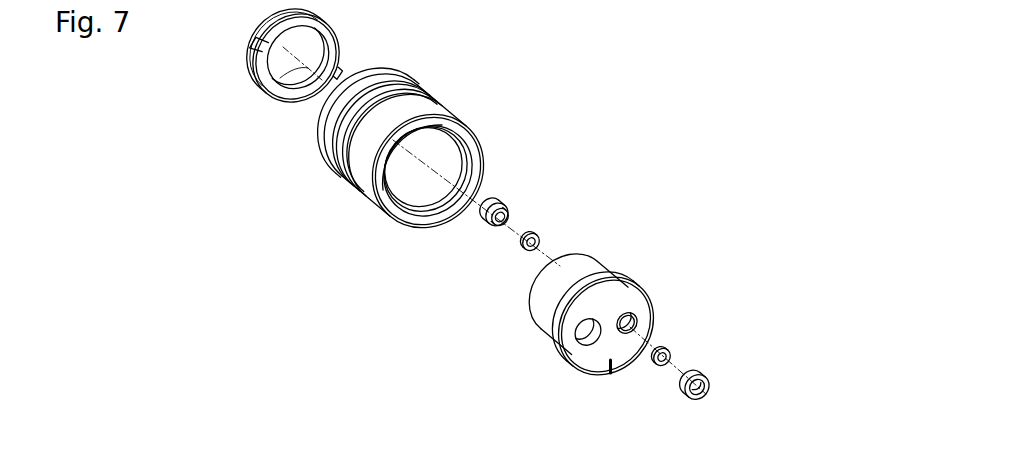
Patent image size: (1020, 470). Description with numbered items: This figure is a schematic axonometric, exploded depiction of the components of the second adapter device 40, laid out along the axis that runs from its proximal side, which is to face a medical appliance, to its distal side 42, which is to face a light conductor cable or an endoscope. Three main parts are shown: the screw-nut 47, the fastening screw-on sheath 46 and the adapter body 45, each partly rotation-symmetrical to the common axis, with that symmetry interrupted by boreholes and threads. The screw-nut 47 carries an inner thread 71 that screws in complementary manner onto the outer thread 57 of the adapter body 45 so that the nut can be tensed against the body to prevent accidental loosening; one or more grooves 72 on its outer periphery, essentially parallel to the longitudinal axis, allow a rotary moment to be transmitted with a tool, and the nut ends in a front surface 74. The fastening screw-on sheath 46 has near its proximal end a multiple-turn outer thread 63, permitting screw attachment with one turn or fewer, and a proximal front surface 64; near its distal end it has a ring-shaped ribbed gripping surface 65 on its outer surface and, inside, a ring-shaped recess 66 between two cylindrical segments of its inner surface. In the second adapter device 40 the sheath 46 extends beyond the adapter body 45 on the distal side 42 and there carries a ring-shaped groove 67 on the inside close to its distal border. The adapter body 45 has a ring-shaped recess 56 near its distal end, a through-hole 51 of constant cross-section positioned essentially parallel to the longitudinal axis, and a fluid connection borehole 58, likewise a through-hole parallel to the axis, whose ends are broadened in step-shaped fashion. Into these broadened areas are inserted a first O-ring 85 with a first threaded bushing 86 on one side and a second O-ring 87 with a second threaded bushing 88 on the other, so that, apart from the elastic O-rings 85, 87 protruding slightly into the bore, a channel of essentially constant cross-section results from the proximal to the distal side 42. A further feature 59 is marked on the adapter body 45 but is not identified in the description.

The second adapter device 40 is at (738, 68).
The distal side 42 is at (691, 331).
The adapter body 45 is at (666, 248).
The fastening screw-on sheath 46 is at (490, 67).
The screw-nut 47 is at (247, 127).
The through-hole 51 is at (583, 340).
The ring-shaped recess 56 is at (613, 272).
The outer thread 57 is at (563, 255).
The fluid connection borehole 58 is at (638, 326).
The slot 59 is at (610, 366).
The outer thread 63 is at (380, 70).
The proximal front surface 64 is at (318, 118).
The ribbed gripping surface 65 is at (335, 160).
The ring-shaped recess 66 is at (477, 194).
The ring-shaped groove 67 is at (447, 213).
The inner thread 71 is at (266, 87).
The grooves 72 is at (256, 36).
The front surface 74 is at (343, 63).
The first O-ring 85 is at (526, 250).
The first threaded bushing 86 is at (495, 228).
The second O-ring 87 is at (671, 357).
The second threaded bushing 88 is at (711, 386).